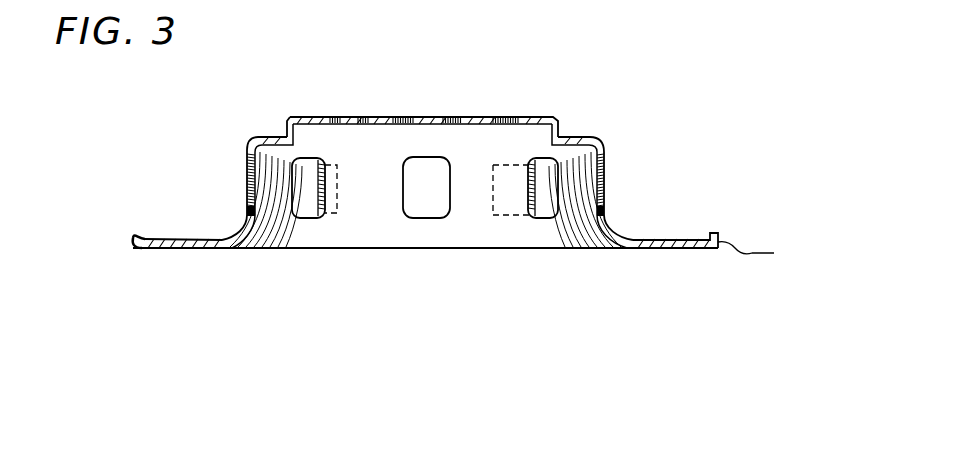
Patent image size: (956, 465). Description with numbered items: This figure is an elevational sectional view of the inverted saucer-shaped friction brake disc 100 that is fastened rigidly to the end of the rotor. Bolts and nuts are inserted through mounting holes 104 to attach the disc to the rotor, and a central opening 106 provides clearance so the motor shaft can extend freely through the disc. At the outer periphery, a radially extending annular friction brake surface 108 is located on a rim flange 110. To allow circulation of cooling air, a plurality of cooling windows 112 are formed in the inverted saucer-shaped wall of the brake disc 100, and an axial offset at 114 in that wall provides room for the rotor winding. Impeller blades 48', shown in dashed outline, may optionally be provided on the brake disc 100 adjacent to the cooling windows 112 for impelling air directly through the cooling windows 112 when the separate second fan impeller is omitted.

The friction brake disc 100 is at (655, 120).
The mounting holes 104 is at (340, 116).
The central opening 106 is at (450, 116).
The annular friction brake surface 108 is at (175, 252).
The rim flange 110 is at (775, 259).
The cooling windows 112 is at (418, 210).
The axial offset 114 is at (570, 137).
The impeller blades 48' is at (427, 173).